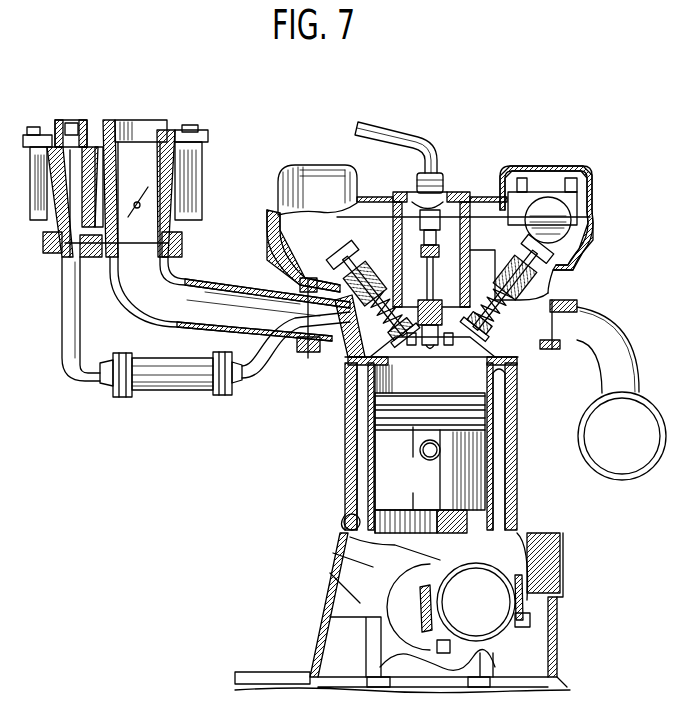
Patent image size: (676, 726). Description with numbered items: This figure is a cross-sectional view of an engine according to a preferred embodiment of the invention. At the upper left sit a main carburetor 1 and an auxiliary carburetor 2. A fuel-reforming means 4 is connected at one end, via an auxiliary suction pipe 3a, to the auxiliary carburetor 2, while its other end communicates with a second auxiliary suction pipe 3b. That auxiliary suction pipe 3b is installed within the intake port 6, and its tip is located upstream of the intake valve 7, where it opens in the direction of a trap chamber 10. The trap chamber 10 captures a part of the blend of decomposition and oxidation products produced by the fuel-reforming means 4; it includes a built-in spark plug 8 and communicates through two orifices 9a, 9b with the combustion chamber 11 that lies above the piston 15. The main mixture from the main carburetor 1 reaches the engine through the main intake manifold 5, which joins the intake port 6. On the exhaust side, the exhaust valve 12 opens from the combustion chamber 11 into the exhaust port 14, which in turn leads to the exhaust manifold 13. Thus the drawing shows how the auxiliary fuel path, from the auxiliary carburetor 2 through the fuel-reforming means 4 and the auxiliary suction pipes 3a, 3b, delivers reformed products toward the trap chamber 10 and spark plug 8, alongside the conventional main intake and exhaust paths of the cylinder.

The main carburetor 1 is at (143, 130).
The auxiliary carburetor 2 is at (75, 117).
The auxiliary suction pipe 3a is at (67, 312).
The auxiliary suction pipe 3b is at (256, 380).
The fuel-reforming means 4 is at (167, 368).
The main intake manifold 5 is at (222, 305).
The intake port 6 is at (312, 352).
The intake valve 7 is at (313, 284).
The spark plug 8 is at (400, 260).
The orifice 9a is at (412, 345).
The orifice 9b is at (433, 350).
The trap chamber 10 is at (449, 345).
The combustion chamber 11 is at (505, 390).
The exhaust valve 12 is at (587, 240).
The exhaust manifold 13 is at (618, 378).
The exhaust port 14 is at (553, 303).
The piston 15 is at (473, 472).